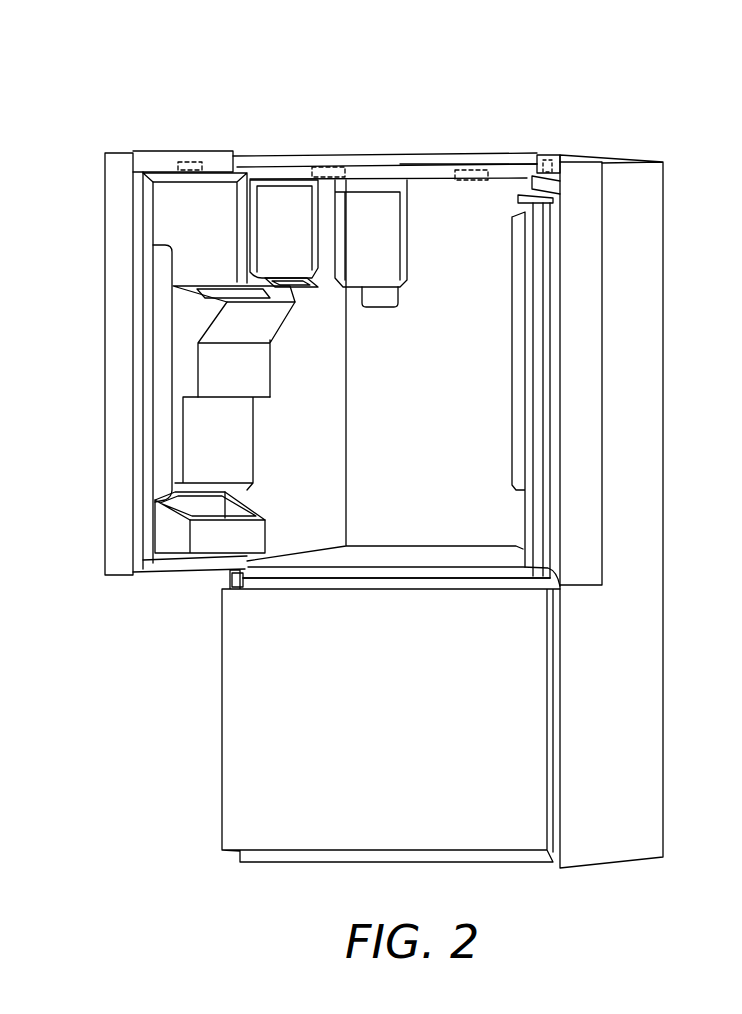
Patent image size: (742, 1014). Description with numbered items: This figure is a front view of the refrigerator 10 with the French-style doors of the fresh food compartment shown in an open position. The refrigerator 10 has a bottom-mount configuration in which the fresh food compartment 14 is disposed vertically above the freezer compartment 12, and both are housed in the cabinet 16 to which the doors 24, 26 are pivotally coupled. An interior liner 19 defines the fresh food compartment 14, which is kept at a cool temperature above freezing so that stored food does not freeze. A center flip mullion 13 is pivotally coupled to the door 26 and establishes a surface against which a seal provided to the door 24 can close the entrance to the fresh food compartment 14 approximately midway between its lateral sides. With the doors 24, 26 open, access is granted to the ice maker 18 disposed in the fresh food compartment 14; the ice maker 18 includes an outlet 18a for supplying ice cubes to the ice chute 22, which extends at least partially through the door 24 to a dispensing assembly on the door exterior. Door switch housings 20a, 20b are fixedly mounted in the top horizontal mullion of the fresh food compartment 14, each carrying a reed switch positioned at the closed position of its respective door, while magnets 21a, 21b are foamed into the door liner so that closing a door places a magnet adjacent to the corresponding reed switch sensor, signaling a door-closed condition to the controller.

The refrigerator 10 is at (638, 114).
The freezer compartment 12 is at (263, 712).
The center flip mullion 13 is at (512, 357).
The fresh food compartment 14 is at (432, 485).
The cabinet 16 is at (625, 676).
The ice maker 18 is at (287, 194).
The outlet 18a is at (307, 288).
The interior liner 19 is at (466, 196).
The door switch housing 20a is at (331, 168).
The door switch housing 20b is at (471, 170).
The magnet 21a is at (192, 160).
The magnet 21b is at (548, 160).
The ice chute 22 is at (258, 373).
The door 24 is at (105, 380).
The door 26 is at (585, 355).